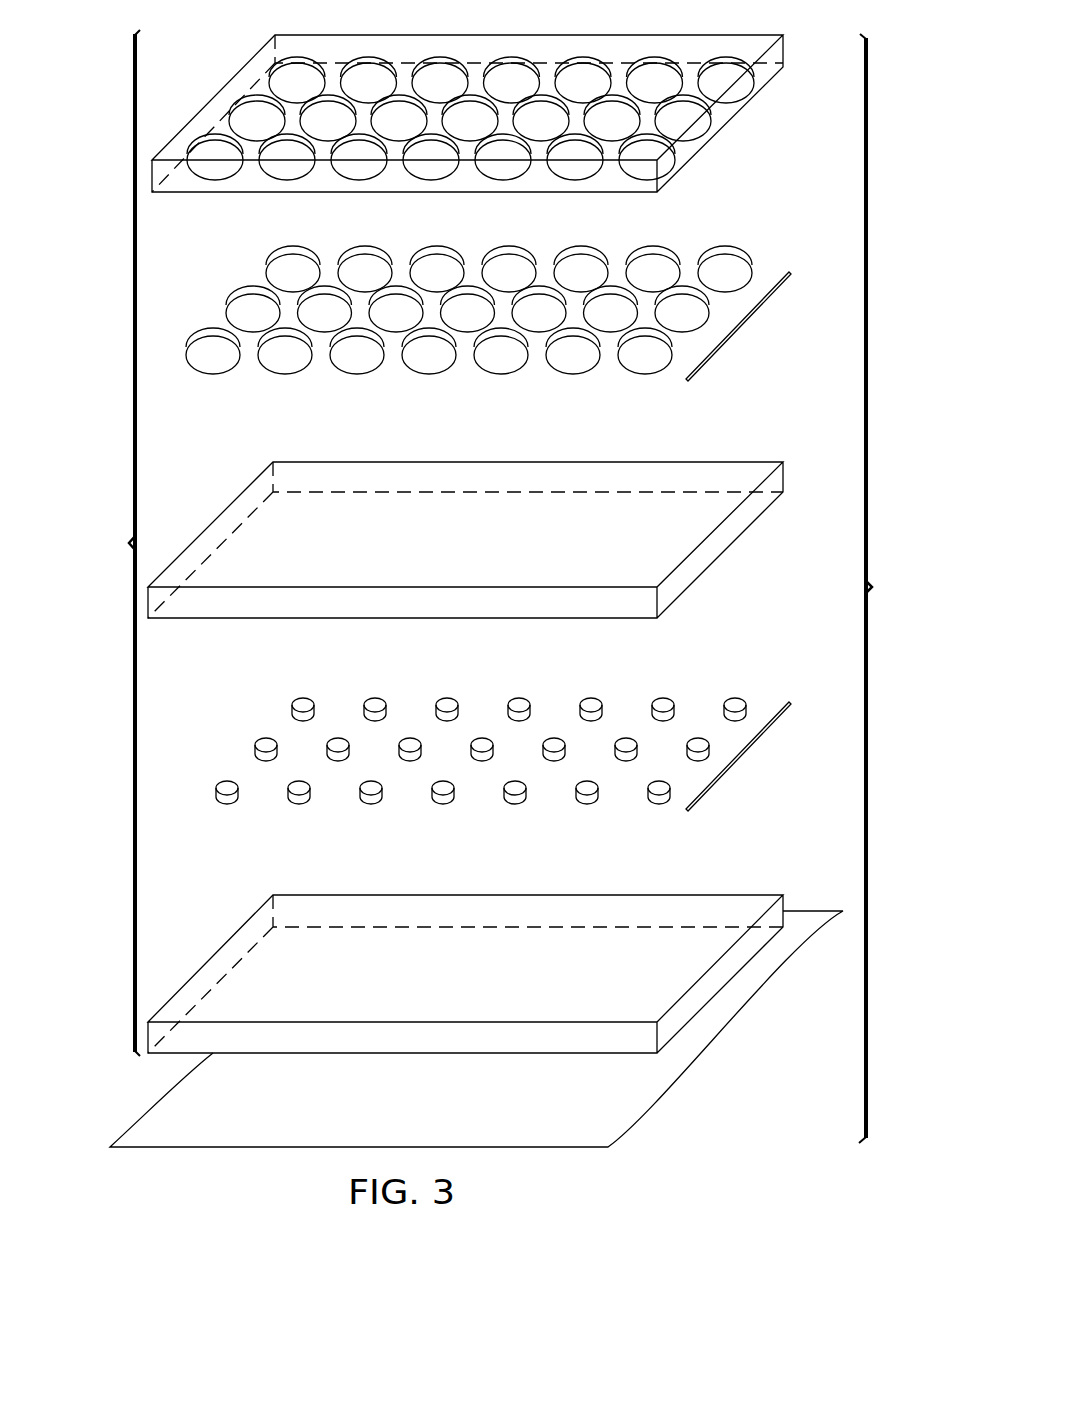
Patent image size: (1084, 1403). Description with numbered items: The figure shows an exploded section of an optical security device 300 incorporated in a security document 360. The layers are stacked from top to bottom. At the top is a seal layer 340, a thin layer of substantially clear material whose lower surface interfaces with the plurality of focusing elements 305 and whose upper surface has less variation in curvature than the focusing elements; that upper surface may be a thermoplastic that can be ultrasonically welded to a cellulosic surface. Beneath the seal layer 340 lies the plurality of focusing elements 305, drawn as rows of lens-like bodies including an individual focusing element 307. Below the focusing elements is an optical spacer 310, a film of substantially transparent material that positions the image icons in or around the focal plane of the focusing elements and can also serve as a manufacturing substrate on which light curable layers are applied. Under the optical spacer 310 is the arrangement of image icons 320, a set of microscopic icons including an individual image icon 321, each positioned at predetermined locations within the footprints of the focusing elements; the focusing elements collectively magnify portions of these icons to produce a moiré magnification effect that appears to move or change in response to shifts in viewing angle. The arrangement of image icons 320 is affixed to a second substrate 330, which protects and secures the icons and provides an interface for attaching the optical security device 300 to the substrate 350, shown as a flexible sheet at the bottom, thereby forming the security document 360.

The optical security device 300 is at (110, 543).
The plurality of focusing elements 305 is at (738, 330).
The focusing element 307 is at (202, 331).
The optical spacer 310 is at (212, 523).
The arrangement of image icons 320 is at (220, 783).
The image icon 321 is at (742, 758).
The second substrate 330 is at (212, 957).
The seal layer 340 is at (213, 97).
The substrate 350 is at (640, 1125).
The security document 360 is at (888, 588).